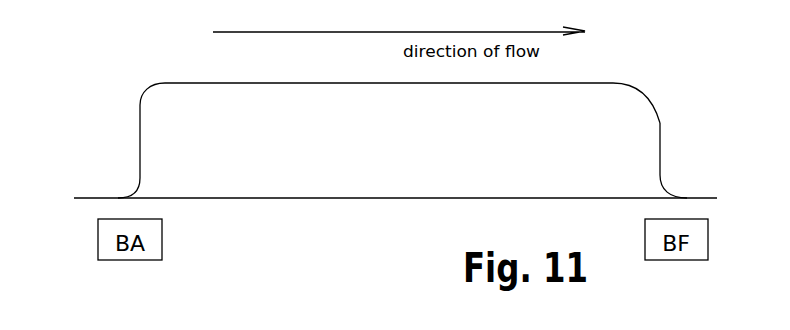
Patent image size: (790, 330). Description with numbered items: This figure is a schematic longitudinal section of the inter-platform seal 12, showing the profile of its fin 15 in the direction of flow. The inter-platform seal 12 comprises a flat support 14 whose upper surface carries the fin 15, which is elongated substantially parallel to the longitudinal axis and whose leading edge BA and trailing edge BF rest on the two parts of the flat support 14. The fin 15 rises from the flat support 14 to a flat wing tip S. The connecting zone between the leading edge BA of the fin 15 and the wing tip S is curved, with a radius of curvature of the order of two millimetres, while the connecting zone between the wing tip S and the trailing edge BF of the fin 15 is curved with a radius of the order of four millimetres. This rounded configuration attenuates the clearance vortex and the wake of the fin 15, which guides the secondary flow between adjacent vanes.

The inter-platform seal 12 is at (359, 214).
The flat support 14 is at (98, 198).
The fin 15 is at (592, 65).
The wing tip S is at (402, 112).